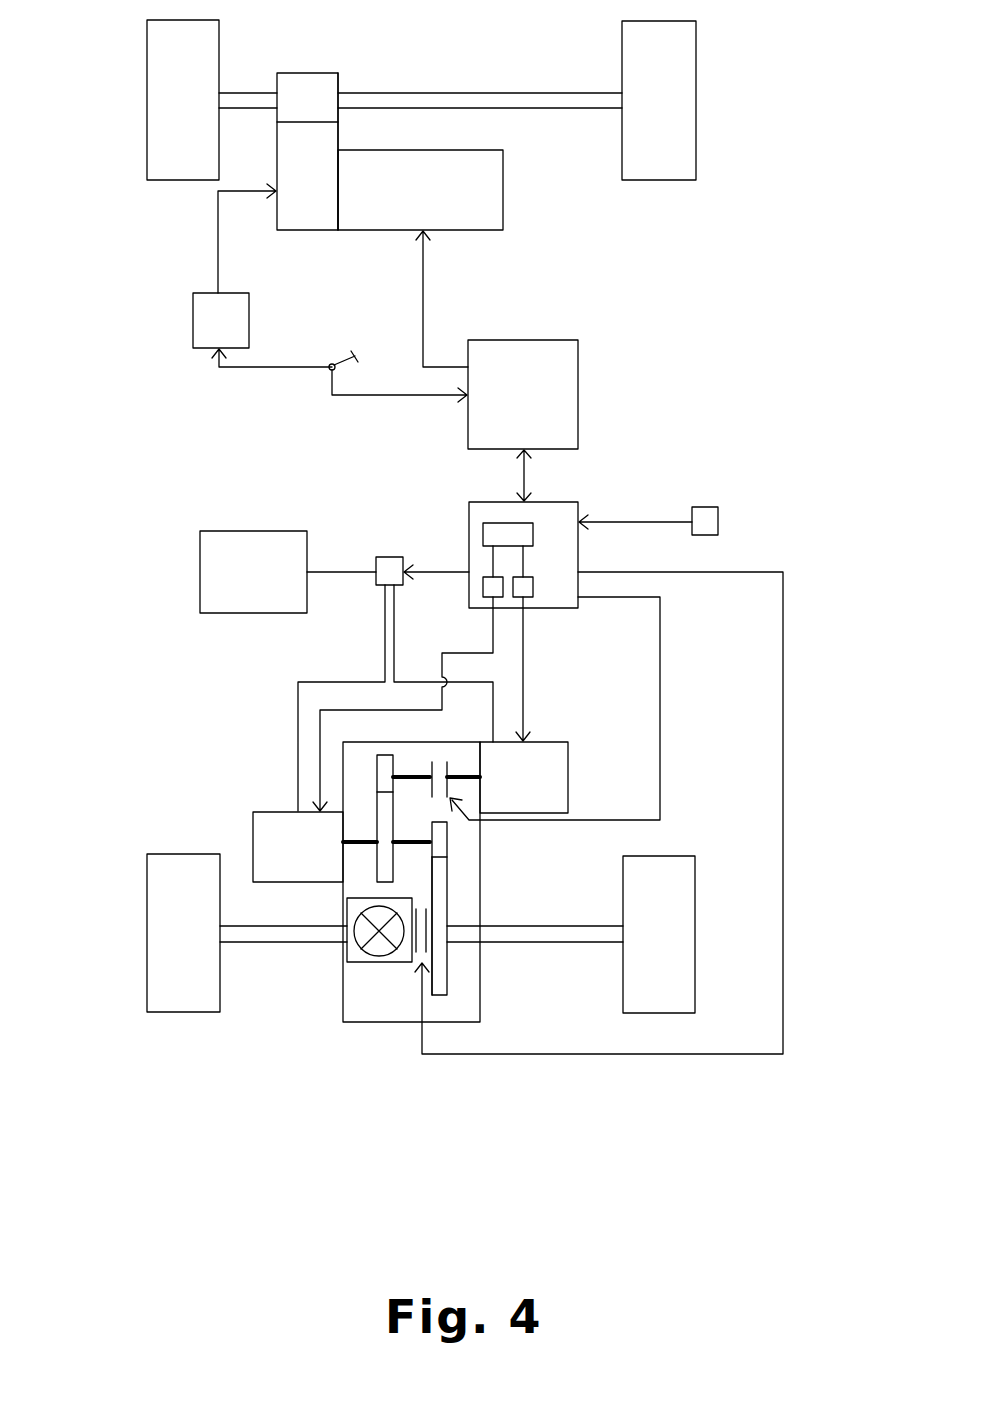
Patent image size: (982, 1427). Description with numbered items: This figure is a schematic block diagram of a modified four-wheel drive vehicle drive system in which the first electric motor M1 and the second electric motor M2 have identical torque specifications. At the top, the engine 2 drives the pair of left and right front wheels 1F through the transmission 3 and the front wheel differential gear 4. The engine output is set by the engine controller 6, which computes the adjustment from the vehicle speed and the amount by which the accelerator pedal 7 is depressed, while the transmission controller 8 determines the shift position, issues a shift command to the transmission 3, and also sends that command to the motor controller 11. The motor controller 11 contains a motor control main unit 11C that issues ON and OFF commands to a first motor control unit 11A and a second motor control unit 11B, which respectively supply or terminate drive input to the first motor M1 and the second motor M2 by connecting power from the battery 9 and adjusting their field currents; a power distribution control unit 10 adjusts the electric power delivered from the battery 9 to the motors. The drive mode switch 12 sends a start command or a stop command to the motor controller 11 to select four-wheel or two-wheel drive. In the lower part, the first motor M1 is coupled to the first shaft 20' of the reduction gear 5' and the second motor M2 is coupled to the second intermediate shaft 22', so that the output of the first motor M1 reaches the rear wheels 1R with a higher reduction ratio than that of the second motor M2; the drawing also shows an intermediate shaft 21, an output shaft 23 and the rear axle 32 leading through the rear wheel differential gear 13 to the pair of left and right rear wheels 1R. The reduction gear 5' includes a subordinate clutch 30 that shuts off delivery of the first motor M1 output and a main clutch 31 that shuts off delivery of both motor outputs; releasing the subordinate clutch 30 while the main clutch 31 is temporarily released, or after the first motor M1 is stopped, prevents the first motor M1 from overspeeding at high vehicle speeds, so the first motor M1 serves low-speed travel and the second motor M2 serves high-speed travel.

The front wheels 1F is at (147, 92).
The rear wheels 1R is at (147, 928).
The engine 2 is at (503, 200).
The transmission 3 is at (338, 138).
The front wheel differential gear 4 is at (313, 73).
The reduction gear 5' is at (449, 882).
The engine controller 6 is at (578, 392).
The accelerator pedal 7 is at (345, 358).
The transmission controller 8 is at (193, 330).
The battery 9 is at (200, 576).
The power distribution control unit 10 is at (390, 557).
The motor controller 11 is at (578, 557).
The first motor control unit 11A is at (533, 583).
The second motor control unit 11B is at (483, 585).
The motor control main unit 11C is at (485, 523).
The drive mode switch 12 is at (718, 522).
The rear wheel differential gear 13 is at (360, 963).
The first shaft 20' is at (412, 756).
The first shaft 21 is at (377, 767).
The second intermediate shaft 22' is at (422, 894).
The output shaft 23 is at (450, 843).
The subordinate clutch 30 is at (445, 762).
The main clutch 31 is at (427, 973).
The rear axle 32 is at (595, 926).
The first electric motor M1 is at (568, 790).
The second electric motor M2 is at (253, 835).